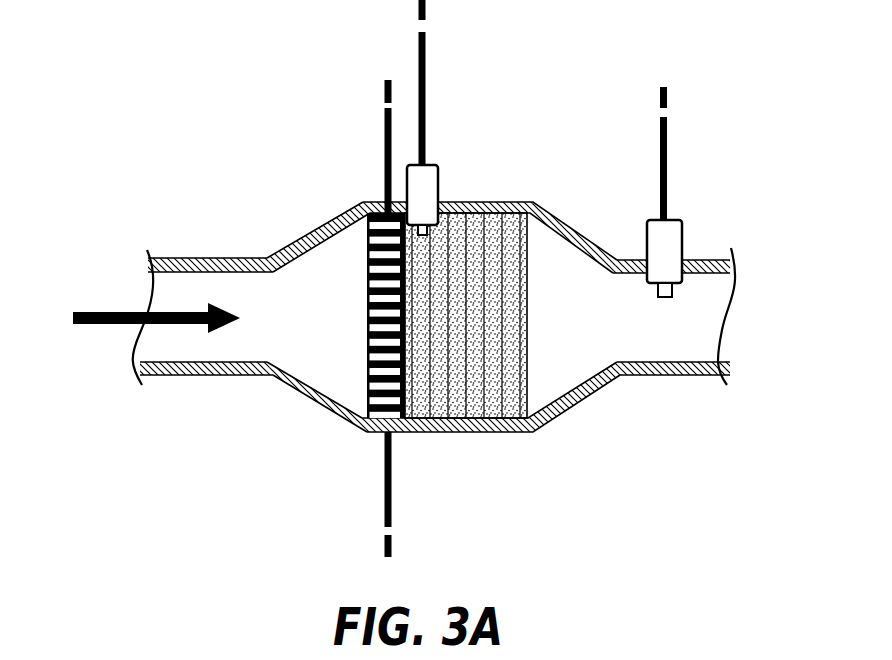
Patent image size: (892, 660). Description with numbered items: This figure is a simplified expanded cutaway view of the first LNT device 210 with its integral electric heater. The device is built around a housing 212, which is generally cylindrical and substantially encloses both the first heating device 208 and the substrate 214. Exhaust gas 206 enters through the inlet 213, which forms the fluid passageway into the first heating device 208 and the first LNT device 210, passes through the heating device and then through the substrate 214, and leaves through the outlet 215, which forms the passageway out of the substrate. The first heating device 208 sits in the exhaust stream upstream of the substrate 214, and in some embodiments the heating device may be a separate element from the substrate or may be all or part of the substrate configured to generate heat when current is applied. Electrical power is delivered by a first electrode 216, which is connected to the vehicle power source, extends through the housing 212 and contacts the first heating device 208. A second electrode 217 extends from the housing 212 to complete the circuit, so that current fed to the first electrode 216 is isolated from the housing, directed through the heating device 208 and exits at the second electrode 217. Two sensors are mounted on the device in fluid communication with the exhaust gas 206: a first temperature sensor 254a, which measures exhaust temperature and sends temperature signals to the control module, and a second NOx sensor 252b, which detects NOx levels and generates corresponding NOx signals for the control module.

The exhaust gas 206 is at (115, 308).
The first heating device 208 is at (382, 392).
The first LNT device 210 is at (441, 279).
The housing 212 is at (302, 398).
The inlet 213 is at (227, 258).
The substrate 214 is at (478, 383).
The outlet 215 is at (708, 377).
The first electrode 216 is at (384, 168).
The second electrode 217 is at (382, 492).
The second NOx sensor 252b is at (682, 248).
The first temperature sensor 254a is at (440, 183).